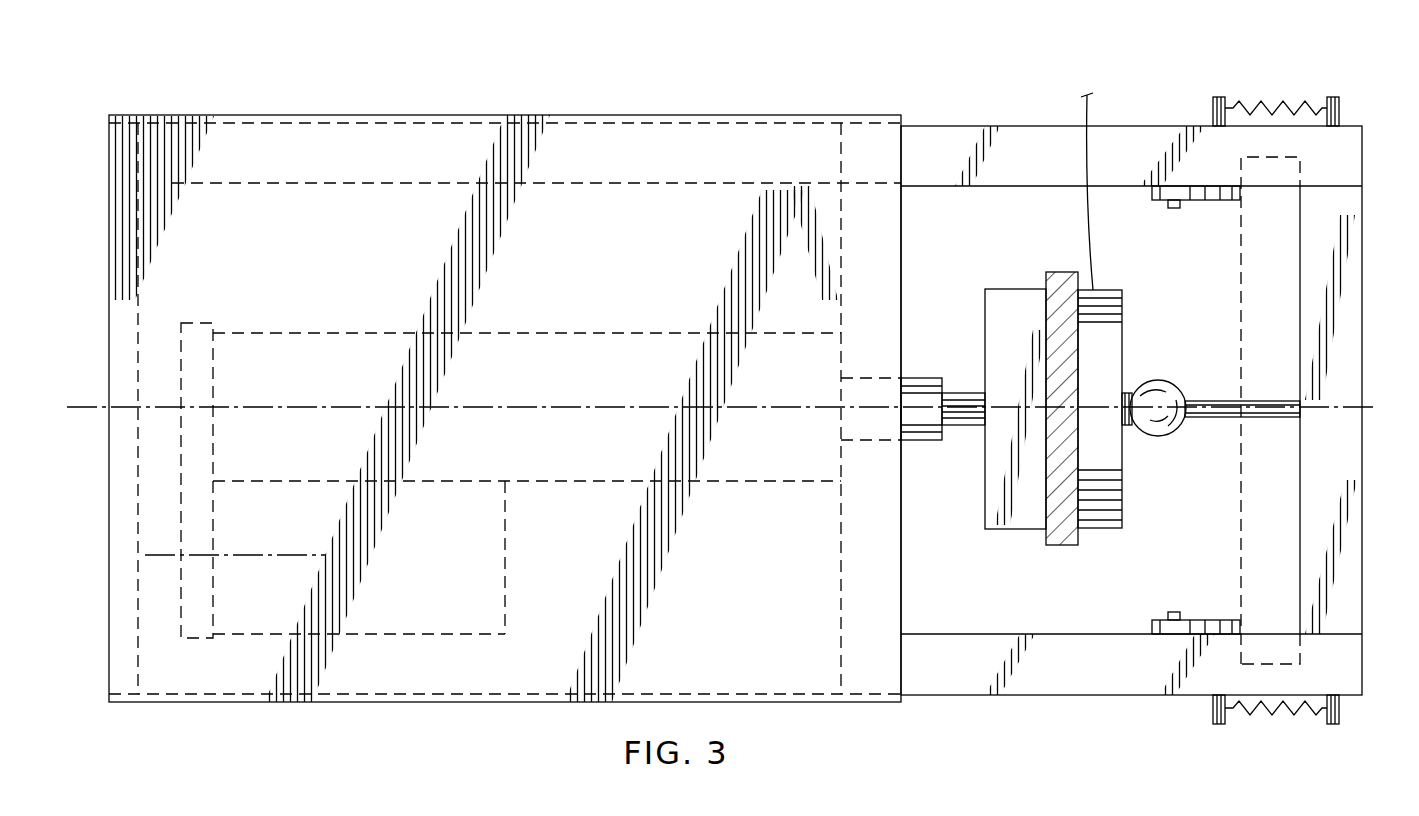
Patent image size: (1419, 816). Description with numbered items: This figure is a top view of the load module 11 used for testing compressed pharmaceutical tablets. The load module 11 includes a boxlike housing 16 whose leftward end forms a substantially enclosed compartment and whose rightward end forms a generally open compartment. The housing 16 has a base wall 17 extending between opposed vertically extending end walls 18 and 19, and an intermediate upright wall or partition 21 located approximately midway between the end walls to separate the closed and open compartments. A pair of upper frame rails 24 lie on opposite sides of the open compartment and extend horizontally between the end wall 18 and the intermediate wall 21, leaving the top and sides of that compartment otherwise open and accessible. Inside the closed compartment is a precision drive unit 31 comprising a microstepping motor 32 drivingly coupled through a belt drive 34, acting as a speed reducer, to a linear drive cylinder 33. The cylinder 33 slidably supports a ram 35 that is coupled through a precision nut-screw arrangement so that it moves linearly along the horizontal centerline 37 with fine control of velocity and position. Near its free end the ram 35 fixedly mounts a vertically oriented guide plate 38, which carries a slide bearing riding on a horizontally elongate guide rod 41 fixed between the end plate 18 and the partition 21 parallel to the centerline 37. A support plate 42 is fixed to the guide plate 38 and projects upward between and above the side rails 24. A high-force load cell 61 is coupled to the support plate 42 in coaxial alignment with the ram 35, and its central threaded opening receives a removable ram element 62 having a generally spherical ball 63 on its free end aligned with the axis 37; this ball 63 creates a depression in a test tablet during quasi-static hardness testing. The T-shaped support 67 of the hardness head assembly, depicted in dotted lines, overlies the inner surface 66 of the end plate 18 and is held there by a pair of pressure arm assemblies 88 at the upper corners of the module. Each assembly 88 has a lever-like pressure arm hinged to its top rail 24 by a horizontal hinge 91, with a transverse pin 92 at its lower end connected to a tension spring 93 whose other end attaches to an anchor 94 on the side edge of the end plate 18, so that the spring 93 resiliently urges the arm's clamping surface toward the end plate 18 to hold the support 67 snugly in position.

The load module 11 is at (403, 710).
The boxlike housing 16 is at (713, 205).
The base wall 17 is at (1090, 615).
The end wall 18 is at (1340, 510).
The end wall 19 is at (122, 608).
The intermediate upright wall or partition 21 is at (875, 600).
The upper frame rails 24 is at (997, 157).
The precision drive unit 31 is at (545, 330).
The microstepping motor 32 is at (485, 570).
The linear drive cylinder 33 is at (687, 353).
The belt drive 34 is at (195, 478).
The ram 35 is at (915, 393).
The horizontal centerline 37 is at (311, 406).
The guide plate 38 is at (1008, 305).
The guide rod 41 is at (1212, 417).
The support plate 42 is at (1058, 285).
The load cell 61 is at (1110, 342).
The ram element 62 is at (1130, 393).
The ball 63 is at (1168, 392).
The inner surface 66 is at (1293, 578).
The T-shaped platelike support 67 is at (1273, 318).
The pressure arm assemblies 88 is at (1205, 205).
The horizontal hinge 91 is at (1168, 205).
The pin 92 is at (1218, 97).
The tension spring 93 is at (1265, 107).
The anchor 94 is at (1333, 97).